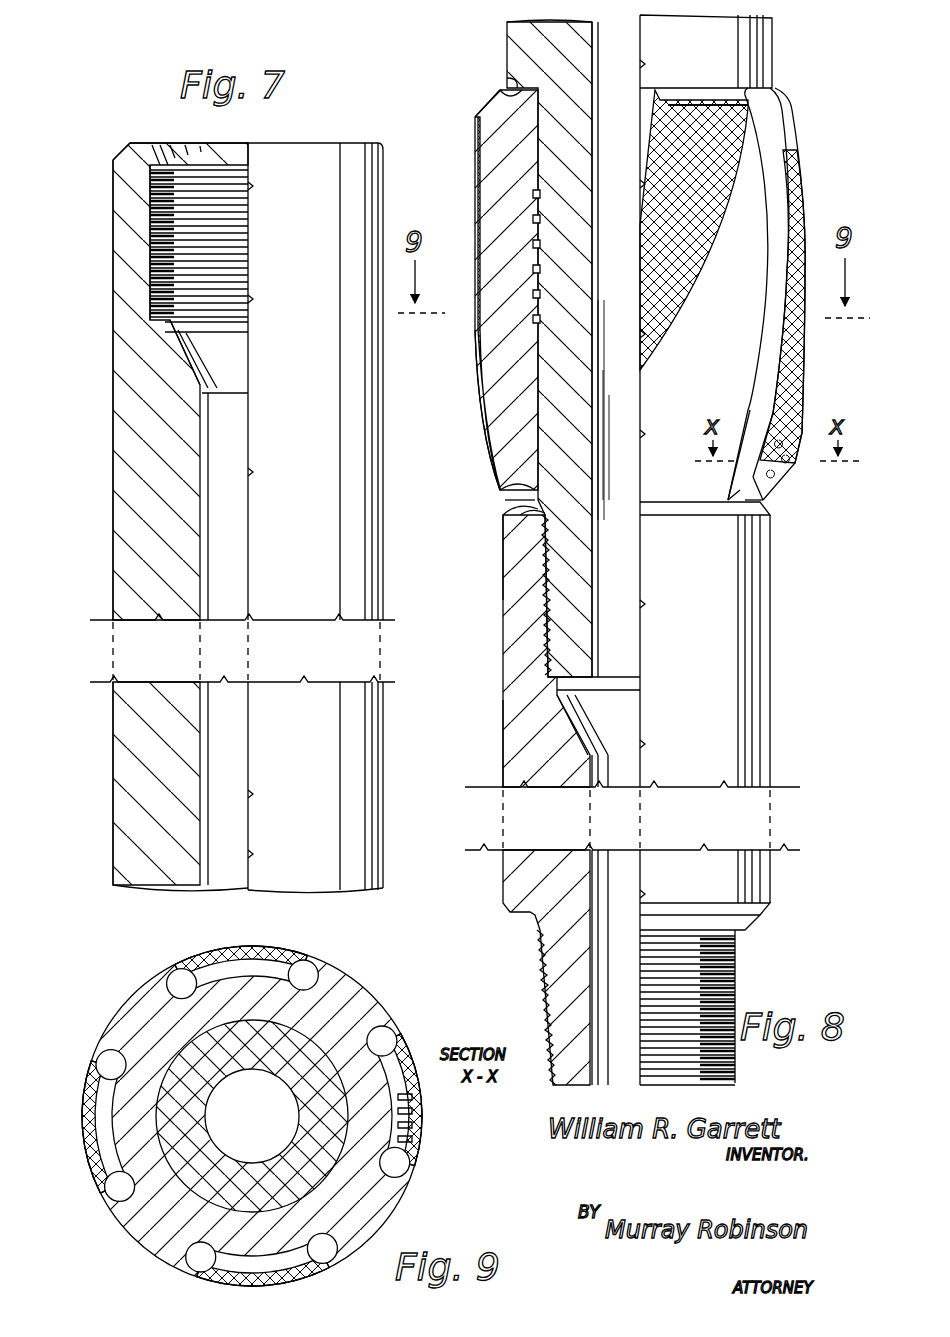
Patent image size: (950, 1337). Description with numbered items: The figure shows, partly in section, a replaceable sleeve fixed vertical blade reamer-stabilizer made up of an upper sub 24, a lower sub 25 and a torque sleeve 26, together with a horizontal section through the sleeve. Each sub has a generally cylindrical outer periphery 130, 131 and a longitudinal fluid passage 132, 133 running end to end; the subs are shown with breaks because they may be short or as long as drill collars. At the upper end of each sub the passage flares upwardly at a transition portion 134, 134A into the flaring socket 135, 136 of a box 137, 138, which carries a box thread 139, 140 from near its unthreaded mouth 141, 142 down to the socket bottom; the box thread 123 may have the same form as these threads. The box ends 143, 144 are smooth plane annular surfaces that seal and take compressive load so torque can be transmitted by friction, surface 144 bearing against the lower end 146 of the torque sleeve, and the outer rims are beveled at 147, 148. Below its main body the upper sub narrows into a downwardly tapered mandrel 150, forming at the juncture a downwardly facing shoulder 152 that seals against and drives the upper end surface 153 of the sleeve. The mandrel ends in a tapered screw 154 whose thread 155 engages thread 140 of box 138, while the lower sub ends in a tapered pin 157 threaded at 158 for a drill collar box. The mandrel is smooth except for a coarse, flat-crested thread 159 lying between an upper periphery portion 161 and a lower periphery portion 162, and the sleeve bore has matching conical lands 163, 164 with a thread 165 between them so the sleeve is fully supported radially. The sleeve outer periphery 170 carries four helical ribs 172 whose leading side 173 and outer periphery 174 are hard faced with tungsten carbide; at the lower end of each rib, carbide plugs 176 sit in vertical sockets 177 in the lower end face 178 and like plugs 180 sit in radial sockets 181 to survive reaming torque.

In FIG. 7, the upper sub 24 is at (110, 494).
In FIG. 8, the lower sub 25 is at (500, 660).
In FIG. 8, the torque sleeve 26 is at (472, 176).
In FIG. 9, the torque sleeve 26 is at (248, 985).
In FIG. 8, the box thread 123 is at (545, 602).
In FIG. 7, the outer periphery of upper sub 130 is at (113, 540).
In FIG. 8, the outer periphery of upper sub 130 is at (507, 48).
In FIG. 8, the outer periphery of lower sub 131 is at (503, 750).
In FIG. 7, the fluid passage of upper sub 132 is at (205, 468).
In FIG. 8, the fluid passage of upper sub 132 is at (640, 50).
In FIG. 8, the fluid passage of lower sub 133 is at (598, 878).
In FIG. 7, the flaring transition portion 134 is at (187, 362).
In FIG. 8, the flaring transition portion 134A is at (570, 722).
In FIG. 7, the socket of upper box 135 is at (168, 328).
In FIG. 8, the socket of lower box 136 is at (555, 690).
In FIG. 7, the box of upper sub 137 is at (133, 243).
In FIG. 8, the box of lower sub 138 is at (518, 572).
In FIG. 7, the box thread of upper sub 139 is at (160, 300).
In FIG. 8, the box thread of lower sub 140 is at (548, 632).
In FIG. 7, the unthreaded mouth 141 is at (165, 158).
In FIG. 8, the unthreaded mouth 142 is at (542, 535).
In FIG. 7, the end of upper box 143 is at (140, 143).
In FIG. 8, the end of lower box 144 is at (528, 518).
In FIG. 8, the lower end of torque sleeve 146 is at (508, 489).
In FIG. 7, the bevel 147 is at (120, 150).
In FIG. 8, the bevel 148 is at (515, 503).
In FIG. 8, the mandrel 150 is at (570, 284).
In FIG. 9, the mandrel 150 is at (282, 1104).
In FIG. 8, the shoulder 152 is at (507, 82).
In FIG. 8, the upper end surface of torque sleeve 153 is at (502, 93).
In FIG. 8, the tapered screw 154 is at (578, 583).
In FIG. 8, the screw thread 155 is at (548, 567).
In FIG. 8, the tapered pin 157 is at (548, 1010).
In FIG. 8, the pin thread 158 is at (548, 1032).
In FIG. 8, the mandrel thread 159 is at (578, 233).
In FIG. 8, the upper portion of mandrel periphery 161 is at (545, 150).
In FIG. 8, the lower portion of mandrel periphery 162 is at (592, 362).
In FIG. 8, the upper land of sleeve 163 is at (490, 145).
In FIG. 8, the lower land of sleeve 164 is at (535, 372).
In FIG. 8, the sleeve thread 165 is at (533, 222).
In FIG. 9, the outer periphery of torque sleeve 170 is at (95, 1160).
In FIG. 8, the helical rib 172 is at (486, 216).
In FIG. 9, the helical rib 172 is at (150, 975).
In FIG. 8, the leading side of rib 173 is at (660, 122).
In FIG. 9, the leading side of rib 173 is at (215, 952).
In FIG. 8, the outer periphery hard facing of rib 174 is at (690, 192).
In FIG. 9, the outer periphery hard facing of rib 174 is at (110, 1010).
In FIG. 8, the tungsten carbide plugs 176 is at (782, 490).
In FIG. 8, the sockets 177 is at (745, 492).
In FIG. 8, the lower end face of rib 178 is at (775, 503).
In FIG. 8, the side face plugs 180 is at (805, 445).
In FIG. 9, the side face plugs 180 is at (410, 1105).
In FIG. 8, the side face sockets 181 is at (770, 430).
In FIG. 9, the side face sockets 181 is at (415, 1120).